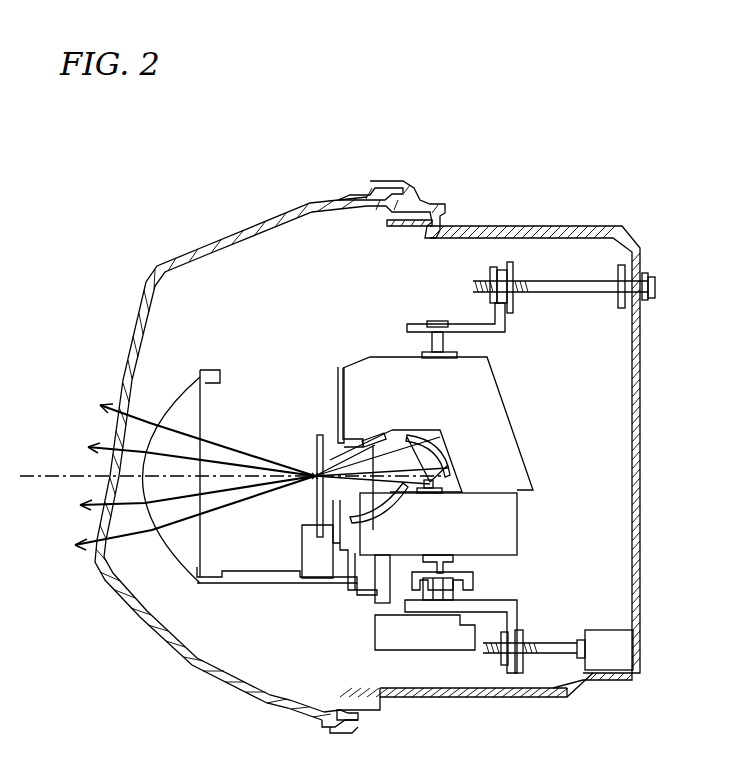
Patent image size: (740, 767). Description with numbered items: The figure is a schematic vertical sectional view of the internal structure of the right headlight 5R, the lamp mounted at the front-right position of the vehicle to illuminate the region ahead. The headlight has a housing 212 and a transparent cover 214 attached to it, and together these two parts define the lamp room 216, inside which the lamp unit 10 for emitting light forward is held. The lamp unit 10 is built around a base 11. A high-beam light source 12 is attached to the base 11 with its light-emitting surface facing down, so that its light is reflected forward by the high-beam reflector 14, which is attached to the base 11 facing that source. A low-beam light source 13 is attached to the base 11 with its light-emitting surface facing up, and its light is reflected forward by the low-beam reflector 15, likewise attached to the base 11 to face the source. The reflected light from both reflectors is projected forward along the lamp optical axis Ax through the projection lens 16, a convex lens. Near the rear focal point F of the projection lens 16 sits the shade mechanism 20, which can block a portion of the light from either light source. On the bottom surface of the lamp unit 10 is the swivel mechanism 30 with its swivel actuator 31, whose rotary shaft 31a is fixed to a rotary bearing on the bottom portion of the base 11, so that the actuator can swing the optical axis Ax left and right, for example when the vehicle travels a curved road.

The right headlight 5R is at (205, 205).
The transparent cover 214 is at (280, 213).
The lamp room 216 is at (347, 232).
The housing 212 is at (532, 228).
The lamp unit 10 is at (350, 336).
The base 11 is at (476, 388).
The high-beam light source 12 is at (342, 428).
The low-beam light source 13 is at (430, 497).
The high-beam reflector 14 is at (348, 553).
The low-beam reflector 15 is at (437, 453).
The projection lens 16 is at (185, 540).
The shade mechanism 20 is at (320, 505).
The swivel mechanism 30 is at (362, 635).
The swivel actuator 31 is at (415, 632).
The output shaft 31a is at (440, 575).
The lamp optical axis Ax is at (48, 470).
The rear focal point F is at (318, 473).